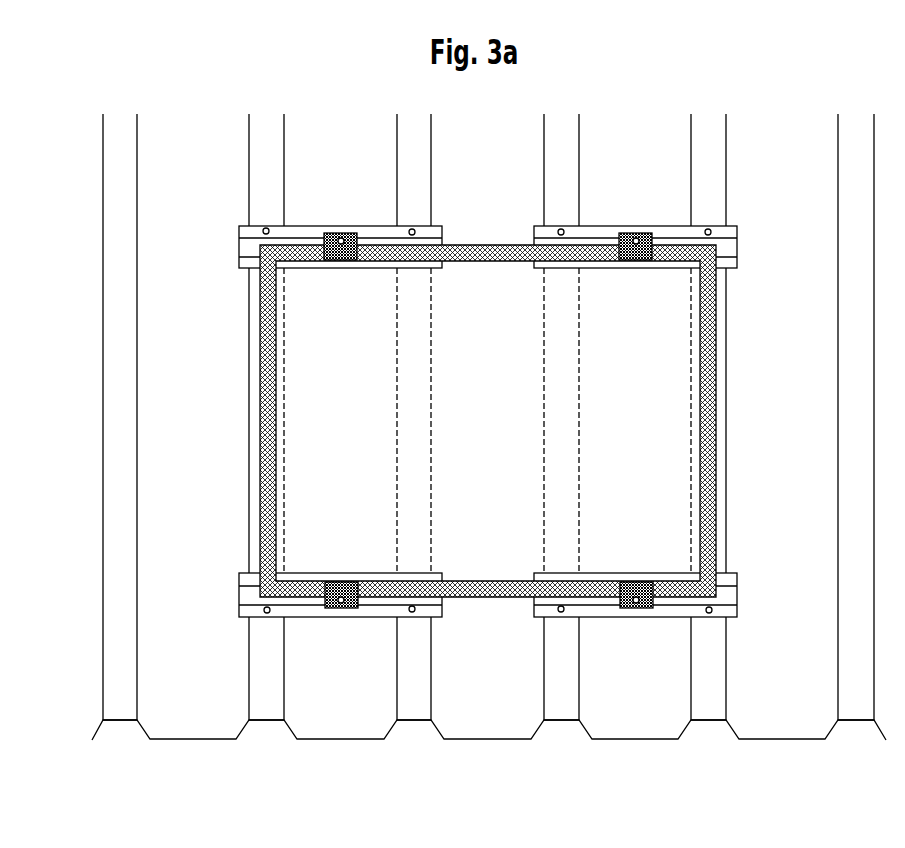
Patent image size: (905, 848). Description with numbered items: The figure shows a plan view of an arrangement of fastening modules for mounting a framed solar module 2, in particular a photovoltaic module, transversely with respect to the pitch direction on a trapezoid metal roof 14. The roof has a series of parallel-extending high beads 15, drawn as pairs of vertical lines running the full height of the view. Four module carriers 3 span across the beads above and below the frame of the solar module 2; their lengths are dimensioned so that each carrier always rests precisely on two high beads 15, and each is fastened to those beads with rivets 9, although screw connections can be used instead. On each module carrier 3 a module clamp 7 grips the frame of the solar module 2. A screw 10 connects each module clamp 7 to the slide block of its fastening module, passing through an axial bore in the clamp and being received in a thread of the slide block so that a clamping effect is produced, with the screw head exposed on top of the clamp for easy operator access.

The solar module 2 is at (475, 232).
The module carrier 3 is at (238, 213).
The module clamp 7 is at (343, 262).
The rivet 9 is at (266, 228).
The screw 10 is at (341, 238).
The trapezoid metal roof 14 is at (82, 571).
The high bead 15 is at (120, 711).